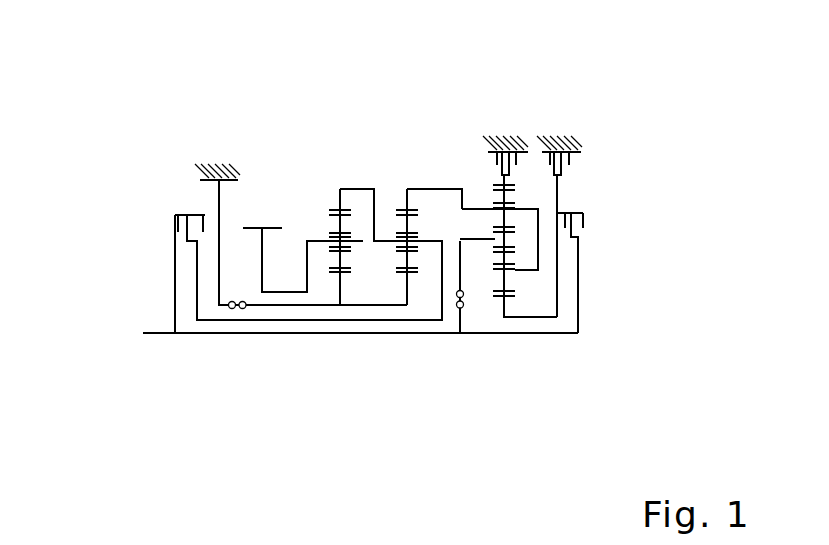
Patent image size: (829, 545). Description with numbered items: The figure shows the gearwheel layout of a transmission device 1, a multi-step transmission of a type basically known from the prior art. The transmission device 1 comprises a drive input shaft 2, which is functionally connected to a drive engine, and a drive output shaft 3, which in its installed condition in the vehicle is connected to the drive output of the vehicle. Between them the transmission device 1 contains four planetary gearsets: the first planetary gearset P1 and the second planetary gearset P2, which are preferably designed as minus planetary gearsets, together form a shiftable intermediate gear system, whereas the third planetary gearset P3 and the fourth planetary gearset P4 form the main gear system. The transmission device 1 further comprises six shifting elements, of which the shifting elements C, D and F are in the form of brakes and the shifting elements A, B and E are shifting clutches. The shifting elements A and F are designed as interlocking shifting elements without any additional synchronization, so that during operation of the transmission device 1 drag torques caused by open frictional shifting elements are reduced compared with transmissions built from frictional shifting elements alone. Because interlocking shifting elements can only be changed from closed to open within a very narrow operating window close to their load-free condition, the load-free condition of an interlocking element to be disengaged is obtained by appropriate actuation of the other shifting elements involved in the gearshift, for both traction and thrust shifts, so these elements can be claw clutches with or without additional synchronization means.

The transmission device 1 is at (182, 127).
The drive input shaft 2 is at (153, 335).
The drive output shaft 3 is at (264, 268).
The shifting element A is at (457, 312).
The shifting element B is at (585, 226).
The shifting element C is at (570, 165).
The shifting element D is at (520, 168).
The shifting element E is at (177, 223).
The shifting element F is at (238, 312).
The first planetary gearset P1 is at (520, 280).
The second planetary gearset P2 is at (491, 194).
The third planetary gearset P3 is at (395, 218).
The fourth planetary gearset P4 is at (357, 253).